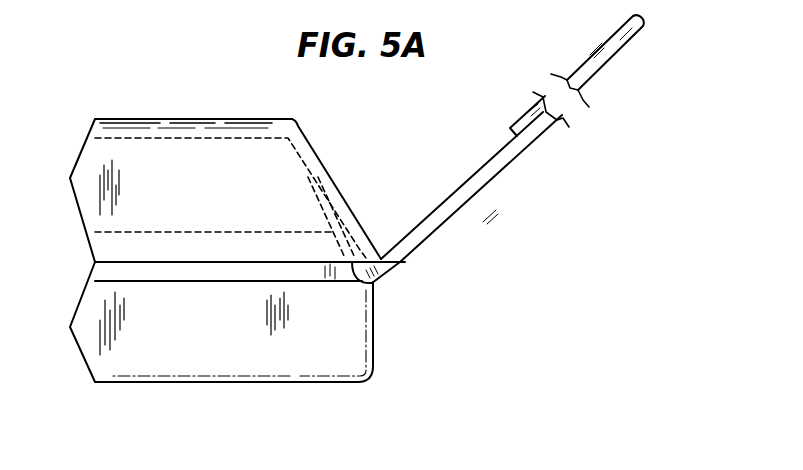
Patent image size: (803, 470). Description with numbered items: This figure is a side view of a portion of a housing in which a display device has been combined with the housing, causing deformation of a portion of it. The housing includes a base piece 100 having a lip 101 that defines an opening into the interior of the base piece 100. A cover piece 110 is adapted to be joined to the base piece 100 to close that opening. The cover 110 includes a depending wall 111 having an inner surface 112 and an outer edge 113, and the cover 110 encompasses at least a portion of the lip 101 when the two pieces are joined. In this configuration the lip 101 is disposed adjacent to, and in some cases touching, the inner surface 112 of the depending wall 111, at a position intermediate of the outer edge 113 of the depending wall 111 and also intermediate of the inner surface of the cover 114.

The base piece 100 is at (267, 347).
The lip 101 is at (200, 272).
The cover piece 110 is at (295, 131).
The depending wall 111 is at (357, 217).
The inner surface 112 is at (297, 153).
The outer edge 113 is at (405, 262).
The inner surface of the cover 114 is at (151, 138).